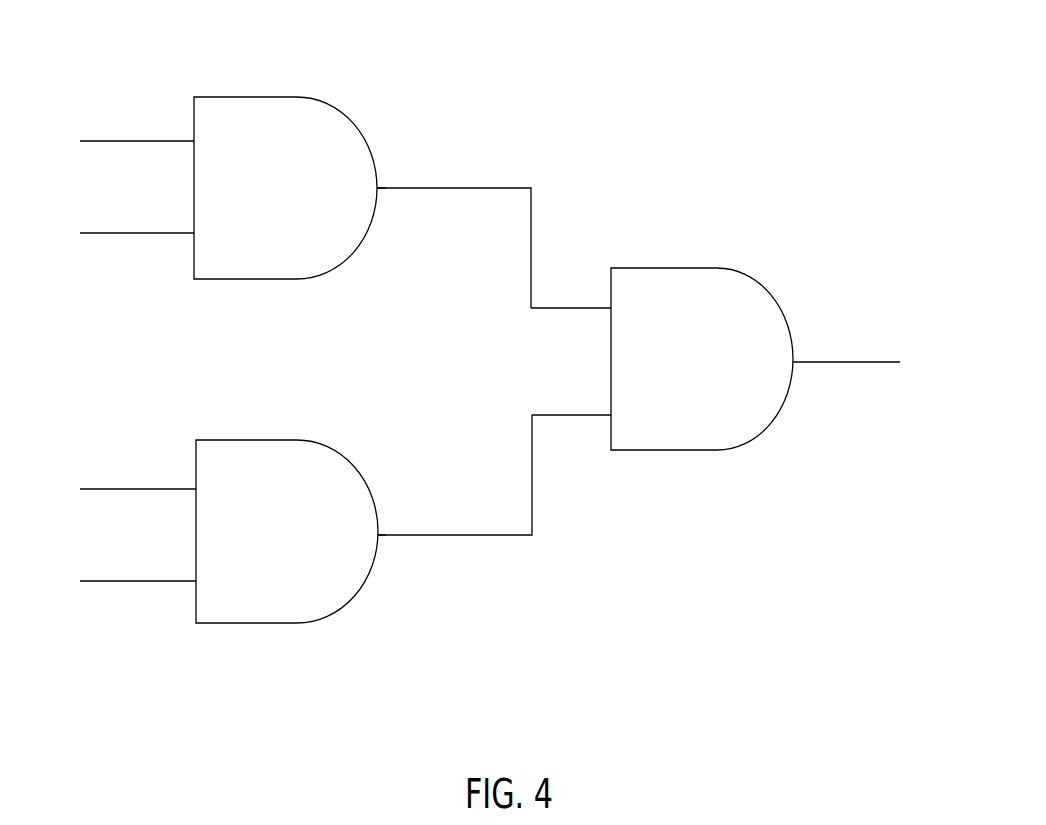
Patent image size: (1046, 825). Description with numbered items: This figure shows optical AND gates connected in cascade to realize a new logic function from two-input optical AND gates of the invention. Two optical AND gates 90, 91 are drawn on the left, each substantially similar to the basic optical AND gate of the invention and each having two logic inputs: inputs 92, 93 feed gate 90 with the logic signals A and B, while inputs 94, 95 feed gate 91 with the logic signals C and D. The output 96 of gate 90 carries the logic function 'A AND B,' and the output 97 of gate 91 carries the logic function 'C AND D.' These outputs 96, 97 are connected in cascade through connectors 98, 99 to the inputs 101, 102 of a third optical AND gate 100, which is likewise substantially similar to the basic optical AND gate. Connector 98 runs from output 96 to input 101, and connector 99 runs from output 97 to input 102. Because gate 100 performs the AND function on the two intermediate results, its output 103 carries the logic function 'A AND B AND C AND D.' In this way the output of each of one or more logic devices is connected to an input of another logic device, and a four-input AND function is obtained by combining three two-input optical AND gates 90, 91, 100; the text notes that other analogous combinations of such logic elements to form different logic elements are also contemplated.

The optical AND gate 90 is at (260, 97).
The optical AND gate 91 is at (264, 625).
The logic input 92 is at (99, 140).
The logic input 93 is at (99, 235).
The logic input 94 is at (99, 488).
The logic input 95 is at (99, 583).
The output 96 is at (384, 194).
The output 97 is at (384, 530).
The connector 98 is at (443, 188).
The connector 99 is at (445, 538).
The third optical AND gate 100 is at (692, 452).
The input 101 is at (576, 308).
The input 102 is at (578, 418).
The output 103 is at (836, 361).